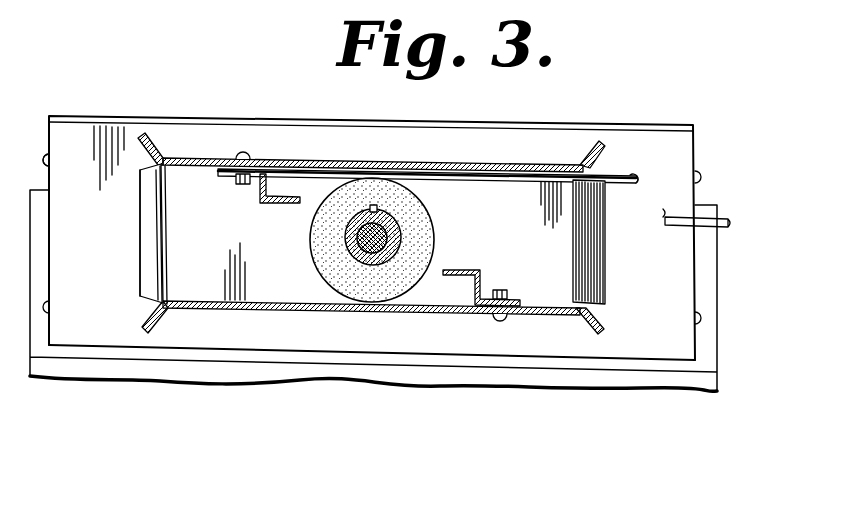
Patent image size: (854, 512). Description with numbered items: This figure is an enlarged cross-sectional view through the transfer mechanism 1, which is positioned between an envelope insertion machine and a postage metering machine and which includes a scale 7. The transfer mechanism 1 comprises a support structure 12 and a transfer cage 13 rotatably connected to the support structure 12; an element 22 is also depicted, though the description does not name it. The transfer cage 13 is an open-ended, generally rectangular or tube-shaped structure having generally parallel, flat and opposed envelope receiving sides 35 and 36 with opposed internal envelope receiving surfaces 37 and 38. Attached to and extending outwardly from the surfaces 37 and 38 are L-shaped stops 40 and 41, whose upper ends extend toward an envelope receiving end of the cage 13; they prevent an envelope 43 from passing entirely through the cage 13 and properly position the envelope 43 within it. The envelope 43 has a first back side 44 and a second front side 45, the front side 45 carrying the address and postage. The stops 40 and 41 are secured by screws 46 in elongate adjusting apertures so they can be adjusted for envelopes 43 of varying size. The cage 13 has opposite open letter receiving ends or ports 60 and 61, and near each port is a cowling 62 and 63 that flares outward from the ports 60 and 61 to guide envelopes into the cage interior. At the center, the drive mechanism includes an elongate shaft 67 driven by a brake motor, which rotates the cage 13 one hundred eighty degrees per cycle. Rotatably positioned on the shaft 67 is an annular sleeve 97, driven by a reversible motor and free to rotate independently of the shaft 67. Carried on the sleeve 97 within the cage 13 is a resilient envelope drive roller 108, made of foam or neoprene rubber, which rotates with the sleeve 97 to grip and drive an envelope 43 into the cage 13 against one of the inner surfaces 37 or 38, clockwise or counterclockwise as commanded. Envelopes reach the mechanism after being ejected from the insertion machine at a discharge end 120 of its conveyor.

The transfer mechanism 1 is at (568, 102).
The scale 7 is at (318, 380).
The support structure 12 is at (524, 122).
The transfer cage 13 is at (452, 162).
The housing top wall 22 is at (179, 117).
The envelope receiving side 35 is at (346, 161).
The envelope receiving side 36 is at (345, 313).
The internal envelope receiving surface 37 is at (500, 177).
The internal envelope receiving surface 38 is at (268, 304).
The stop 40 is at (285, 204).
The stop 41 is at (479, 271).
The envelope 43 is at (641, 172).
The first (back) side 44 is at (412, 162).
The second (front) side 45 is at (458, 178).
The screws 46 is at (247, 157).
The letter receiving end or port 60 is at (128, 177).
The letter receiving end or port 61 is at (598, 313).
The cowling 62 is at (145, 262).
The cowling 63 is at (598, 278).
The elongate shaft 67 is at (346, 232).
The annular sleeve 97 is at (394, 261).
The envelope drive roller 108 is at (434, 237).
The discharge end 120 is at (665, 216).